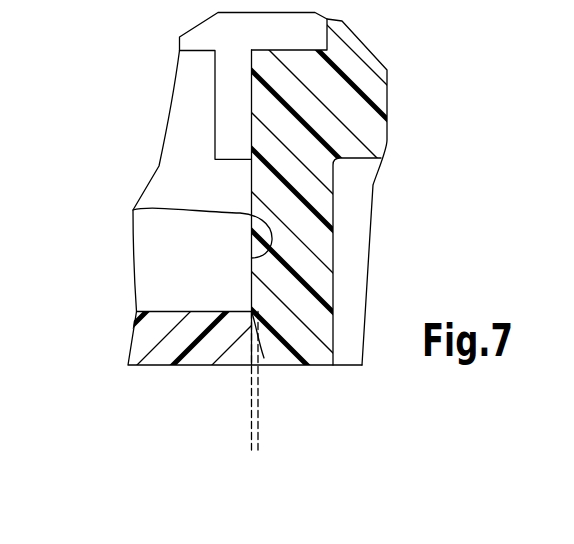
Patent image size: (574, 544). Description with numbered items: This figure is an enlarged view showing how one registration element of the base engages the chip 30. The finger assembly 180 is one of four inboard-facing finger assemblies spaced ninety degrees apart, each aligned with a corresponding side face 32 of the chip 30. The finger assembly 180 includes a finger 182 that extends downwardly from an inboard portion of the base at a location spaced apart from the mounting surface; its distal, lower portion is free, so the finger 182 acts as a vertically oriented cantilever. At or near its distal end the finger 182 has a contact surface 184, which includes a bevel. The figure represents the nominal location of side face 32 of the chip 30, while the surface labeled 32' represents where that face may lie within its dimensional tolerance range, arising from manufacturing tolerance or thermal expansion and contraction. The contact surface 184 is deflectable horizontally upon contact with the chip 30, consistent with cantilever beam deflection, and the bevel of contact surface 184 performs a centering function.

The chip 30 is at (173, 278).
The side face 32 is at (163, 308).
The surface representing tolerance location of side face 32' is at (298, 381).
The finger assembly 180 is at (362, 133).
The finger 182 is at (305, 258).
The contact surface 184 is at (264, 358).